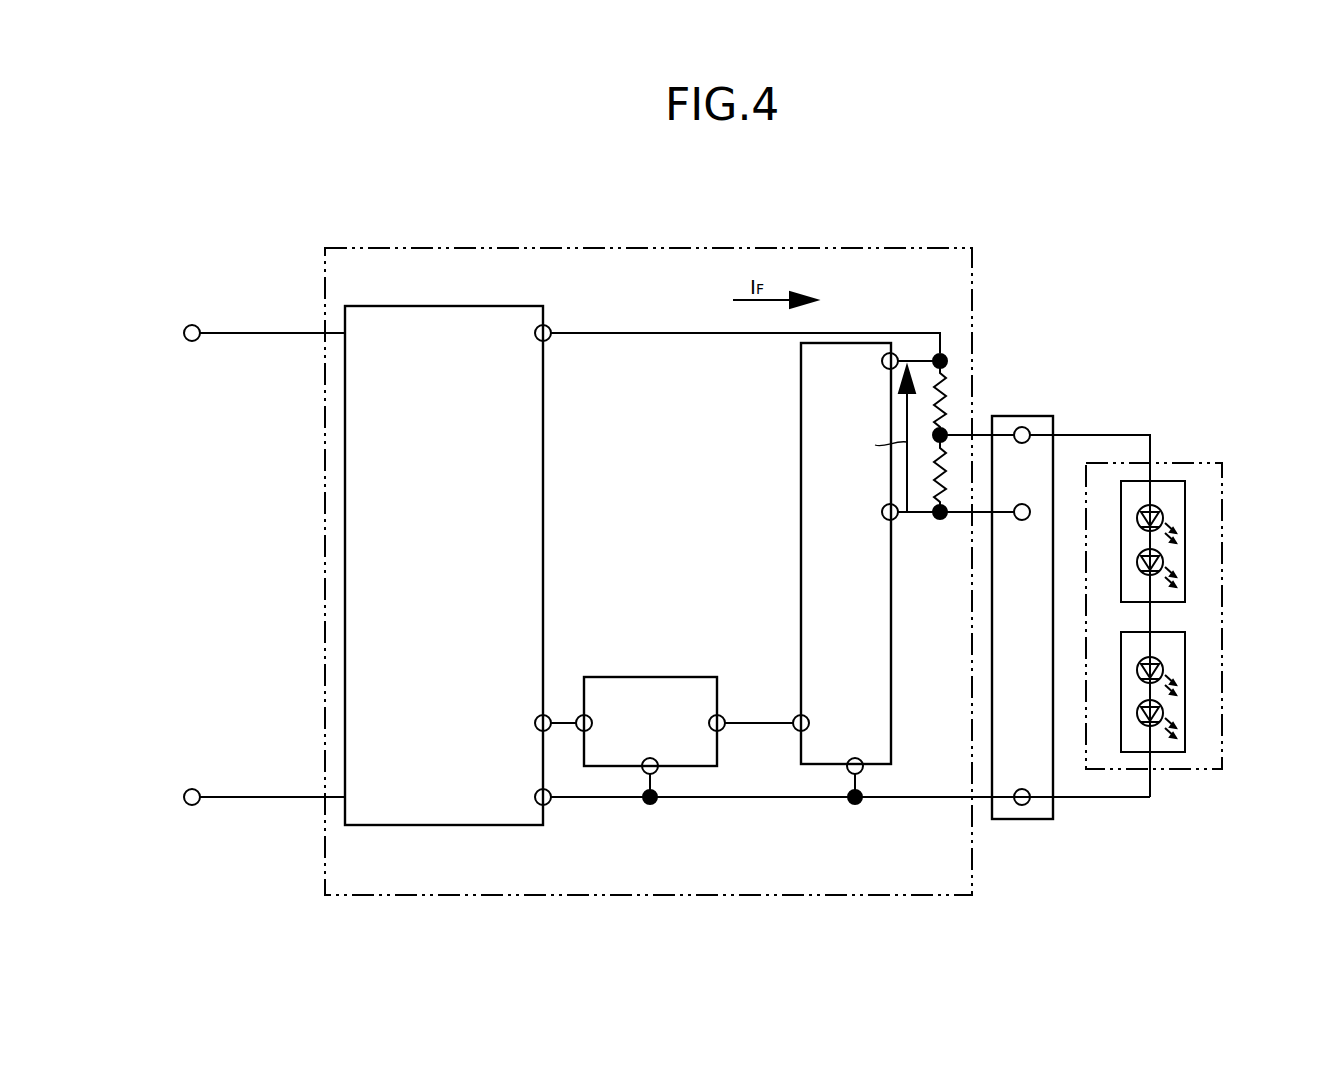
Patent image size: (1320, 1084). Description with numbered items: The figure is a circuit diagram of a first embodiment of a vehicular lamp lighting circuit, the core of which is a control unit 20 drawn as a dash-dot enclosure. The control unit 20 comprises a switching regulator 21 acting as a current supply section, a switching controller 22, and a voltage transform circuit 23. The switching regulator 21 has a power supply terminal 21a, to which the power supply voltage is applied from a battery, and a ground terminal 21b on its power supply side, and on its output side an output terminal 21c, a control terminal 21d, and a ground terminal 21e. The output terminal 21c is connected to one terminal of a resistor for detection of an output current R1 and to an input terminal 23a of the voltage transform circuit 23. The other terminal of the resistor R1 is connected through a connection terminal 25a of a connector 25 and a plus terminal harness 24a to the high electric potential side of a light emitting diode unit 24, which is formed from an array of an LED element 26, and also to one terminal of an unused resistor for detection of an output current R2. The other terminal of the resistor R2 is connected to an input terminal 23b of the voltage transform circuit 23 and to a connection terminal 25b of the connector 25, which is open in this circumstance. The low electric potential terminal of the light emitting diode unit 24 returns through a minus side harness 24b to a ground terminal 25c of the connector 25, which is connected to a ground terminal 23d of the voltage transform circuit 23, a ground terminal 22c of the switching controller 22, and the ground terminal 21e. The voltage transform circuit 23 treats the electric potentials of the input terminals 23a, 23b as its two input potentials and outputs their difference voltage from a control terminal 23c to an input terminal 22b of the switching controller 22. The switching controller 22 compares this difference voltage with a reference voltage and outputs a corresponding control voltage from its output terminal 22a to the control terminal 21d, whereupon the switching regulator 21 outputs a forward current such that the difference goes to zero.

The control unit 20 is at (658, 248).
The switching regulator 21 is at (375, 555).
The power supply terminal 21a is at (185, 340).
The ground terminal 21b is at (185, 790).
The output terminal 21c is at (548, 340).
The control terminal 21d is at (535, 718).
The ground terminal 21e is at (547, 806).
The switching controller 22 is at (652, 703).
The output terminal 22a is at (582, 715).
The input terminal 22b is at (714, 715).
The ground terminal 22c is at (648, 760).
The voltage transform circuit 23 is at (801, 420).
The input terminal 23a is at (896, 352).
The input terminal 23b is at (898, 520).
The control terminal 23c is at (795, 728).
The ground terminal 23d is at (860, 760).
The light emitting diode unit 24 is at (1178, 462).
The plus terminal harness 24a is at (1110, 433).
The minus side harness 24b is at (1108, 797).
The connector 25 is at (1013, 742).
The connection terminal 25a is at (1025, 425).
The connection terminal 25b is at (1022, 520).
The ground terminal 25c is at (1020, 805).
The LED element 26 is at (1185, 518).
The resistor for detection of an output current R1 is at (948, 395).
The unused resistor for detection of an output current R2 is at (948, 455).